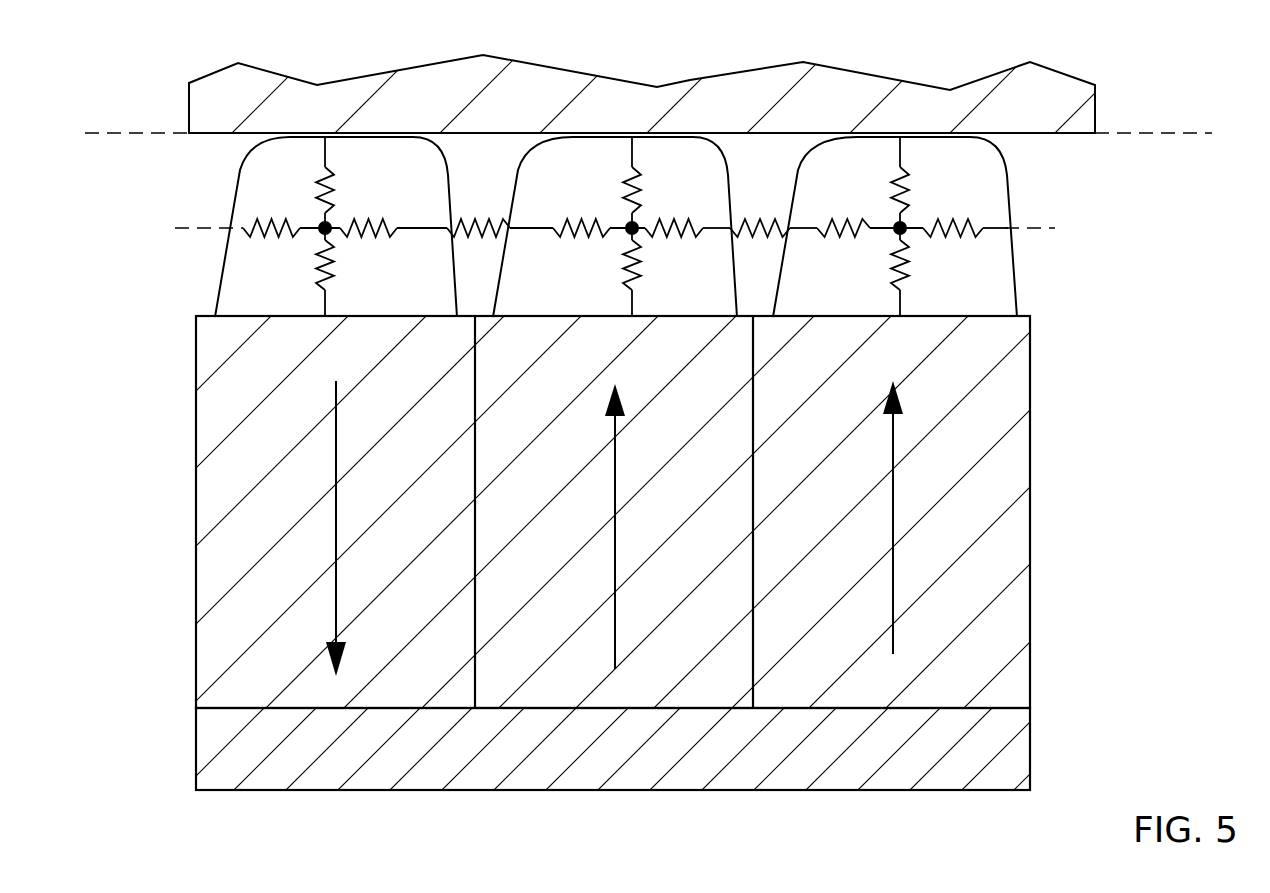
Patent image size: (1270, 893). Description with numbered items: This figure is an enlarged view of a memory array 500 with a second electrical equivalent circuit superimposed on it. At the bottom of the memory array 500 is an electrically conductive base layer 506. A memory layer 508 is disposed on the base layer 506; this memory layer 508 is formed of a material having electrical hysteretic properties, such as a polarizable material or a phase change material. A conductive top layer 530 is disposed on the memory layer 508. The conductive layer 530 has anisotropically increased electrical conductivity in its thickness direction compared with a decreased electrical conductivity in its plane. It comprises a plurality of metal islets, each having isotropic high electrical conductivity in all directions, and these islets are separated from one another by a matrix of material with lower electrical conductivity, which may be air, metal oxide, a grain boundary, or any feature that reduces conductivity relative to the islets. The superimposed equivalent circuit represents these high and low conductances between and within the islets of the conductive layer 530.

The memory array 500 is at (635, 419).
The base layer 506 is at (1031, 743).
The memory layer 508 is at (1031, 572).
The conductive layer 530 is at (1050, 203).